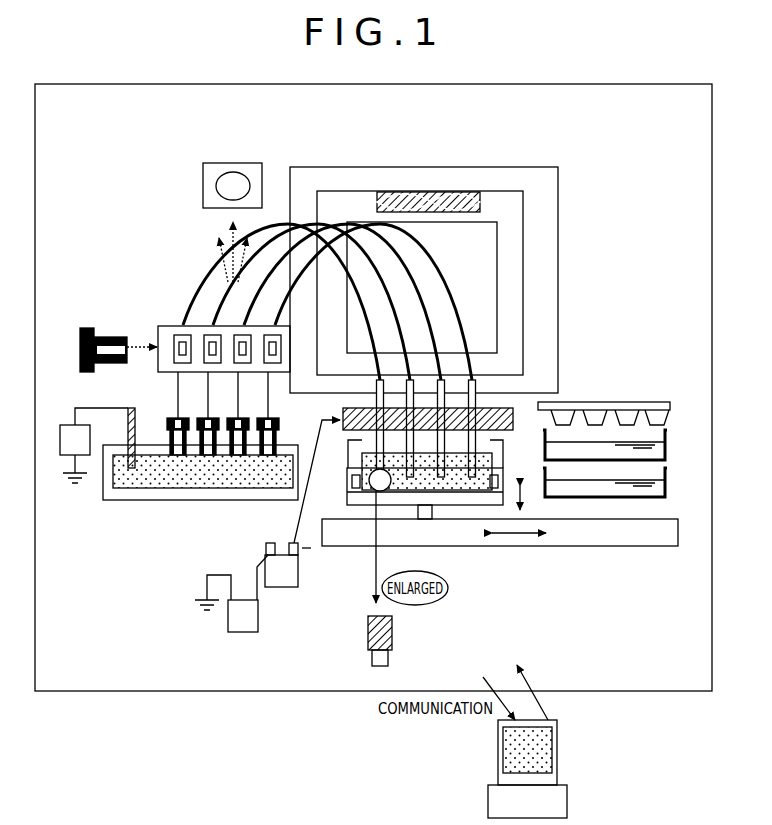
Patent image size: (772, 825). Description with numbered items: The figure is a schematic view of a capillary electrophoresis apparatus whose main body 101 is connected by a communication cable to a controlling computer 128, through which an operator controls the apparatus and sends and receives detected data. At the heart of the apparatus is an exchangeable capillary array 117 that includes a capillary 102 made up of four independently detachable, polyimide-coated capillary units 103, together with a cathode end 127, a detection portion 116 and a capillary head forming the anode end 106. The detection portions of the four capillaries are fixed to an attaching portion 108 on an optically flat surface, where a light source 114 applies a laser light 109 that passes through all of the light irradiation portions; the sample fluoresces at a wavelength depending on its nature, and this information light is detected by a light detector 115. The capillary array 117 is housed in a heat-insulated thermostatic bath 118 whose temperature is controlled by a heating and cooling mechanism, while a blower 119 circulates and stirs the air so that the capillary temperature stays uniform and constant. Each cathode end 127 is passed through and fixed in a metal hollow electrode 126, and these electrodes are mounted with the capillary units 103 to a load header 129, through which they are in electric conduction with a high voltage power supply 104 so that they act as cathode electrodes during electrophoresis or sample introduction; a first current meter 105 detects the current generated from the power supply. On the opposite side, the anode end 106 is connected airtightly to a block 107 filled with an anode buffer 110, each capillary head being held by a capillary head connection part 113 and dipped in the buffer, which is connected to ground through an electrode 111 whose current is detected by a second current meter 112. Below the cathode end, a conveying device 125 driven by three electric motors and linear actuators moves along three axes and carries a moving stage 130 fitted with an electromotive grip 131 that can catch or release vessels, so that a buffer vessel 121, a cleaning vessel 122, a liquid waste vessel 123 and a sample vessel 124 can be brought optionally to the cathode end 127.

The apparatus main body 101 is at (346, 692).
The capillary 102 is at (370, 222).
The capillary unit 103 is at (276, 223).
The high voltage power supply 104 is at (285, 587).
The first current meter 105 is at (242, 632).
The anode end of the capillary 106 is at (168, 422).
The block 107 is at (150, 500).
The attaching portion of the capillary detection portion 108 is at (309, 223).
The laser light 109 is at (141, 345).
The anode buffer 110 is at (250, 487).
The electrode 111 is at (128, 411).
The second current meter 112 is at (59, 447).
The capillary head connection part 113 is at (168, 434).
The light source 114 is at (93, 327).
The light detector 115 is at (203, 179).
The detection portion 116 is at (199, 327).
The capillary array 117 is at (337, 222).
The thermostatic bath 118 is at (431, 192).
The blower 119 is at (465, 192).
The buffer vessel 121 is at (453, 490).
The cleaning vessel 122 is at (650, 479).
The liquid waste vessel 123 is at (650, 441).
The sample vessel 124 is at (640, 402).
The conveying device 125 is at (570, 546).
The hollow electrode 126 is at (393, 630).
The cathode end of the capillary 127 is at (389, 657).
The controlling computer 128 is at (567, 800).
The load header 129 is at (509, 410).
The moving stage 130 is at (361, 505).
The electromotive grip 131 is at (351, 483).